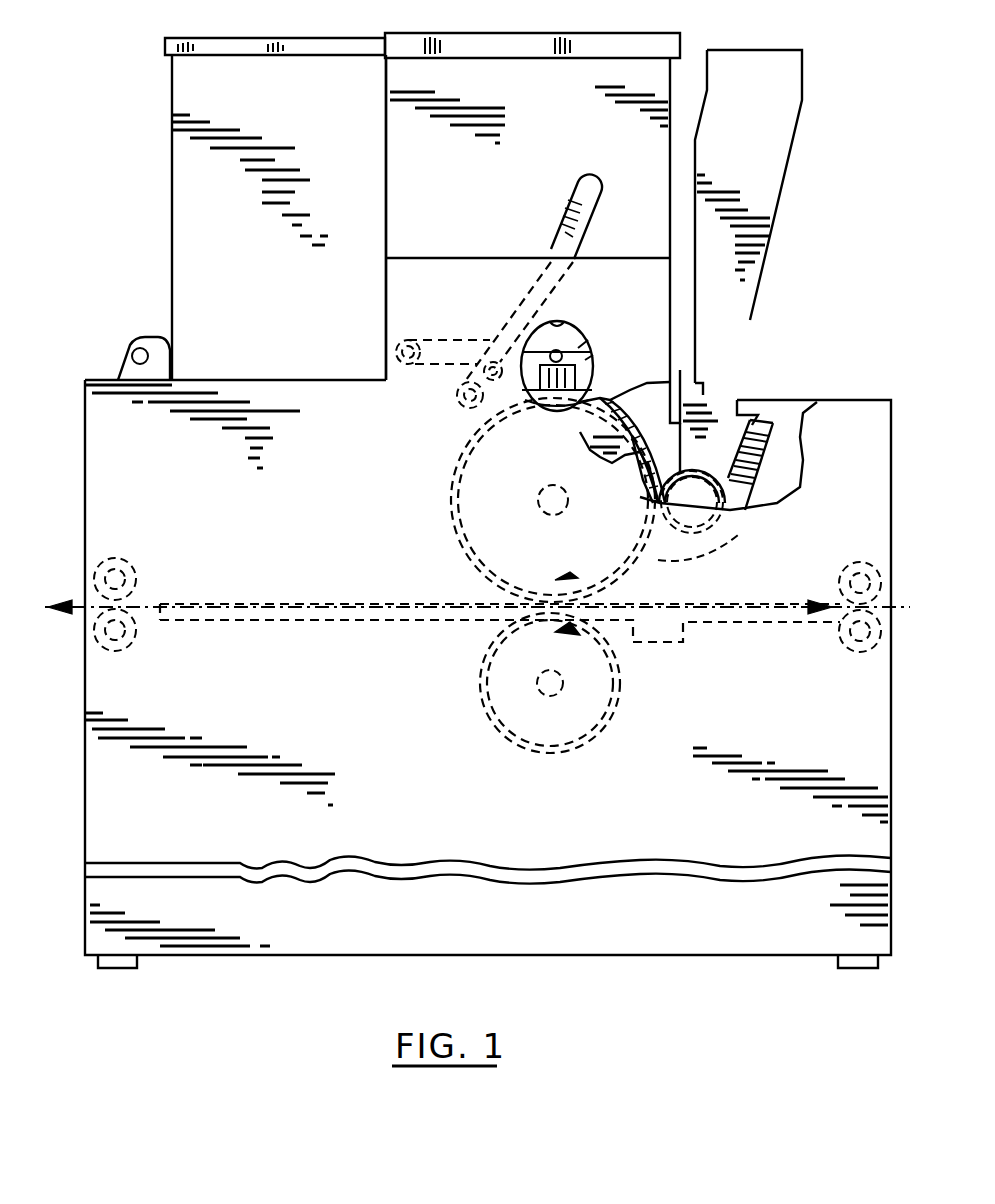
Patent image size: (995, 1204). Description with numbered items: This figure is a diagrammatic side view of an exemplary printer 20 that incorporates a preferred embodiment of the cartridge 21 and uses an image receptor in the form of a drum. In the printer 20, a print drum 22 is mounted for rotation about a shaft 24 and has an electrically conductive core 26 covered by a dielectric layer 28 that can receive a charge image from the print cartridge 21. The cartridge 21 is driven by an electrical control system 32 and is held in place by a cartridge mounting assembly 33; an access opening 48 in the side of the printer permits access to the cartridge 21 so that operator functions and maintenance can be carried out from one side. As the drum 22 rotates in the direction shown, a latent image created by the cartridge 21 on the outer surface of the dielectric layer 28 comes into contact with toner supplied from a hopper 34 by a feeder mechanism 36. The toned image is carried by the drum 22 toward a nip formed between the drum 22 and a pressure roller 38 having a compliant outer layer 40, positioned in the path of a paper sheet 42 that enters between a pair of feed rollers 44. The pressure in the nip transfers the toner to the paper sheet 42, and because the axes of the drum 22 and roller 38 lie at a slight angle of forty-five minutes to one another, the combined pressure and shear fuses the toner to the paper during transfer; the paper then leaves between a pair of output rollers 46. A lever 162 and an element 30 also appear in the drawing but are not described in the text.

The printer 20 is at (100, 293).
The electrical control system 32 is at (500, 181).
The handle lever 162 is at (580, 186).
The cartridge mounting assembly 33 is at (498, 308).
The access opening 48 is at (562, 330).
The cartridge 21 is at (595, 346).
The nozzle 30 is at (580, 368).
The print drum 22 is at (674, 469).
The hopper 34 is at (725, 315).
The shaft 24 is at (540, 488).
The electrically conductive core 26 is at (598, 425).
The dielectric layer 28 is at (613, 463).
The output rollers 46 is at (135, 575).
The paper sheet 42 is at (355, 602).
The feed rollers 44 is at (848, 567).
The feeder mechanism 36 is at (730, 550).
The compliant outer layer 40 is at (521, 683).
The pressure roller 38 is at (522, 707).